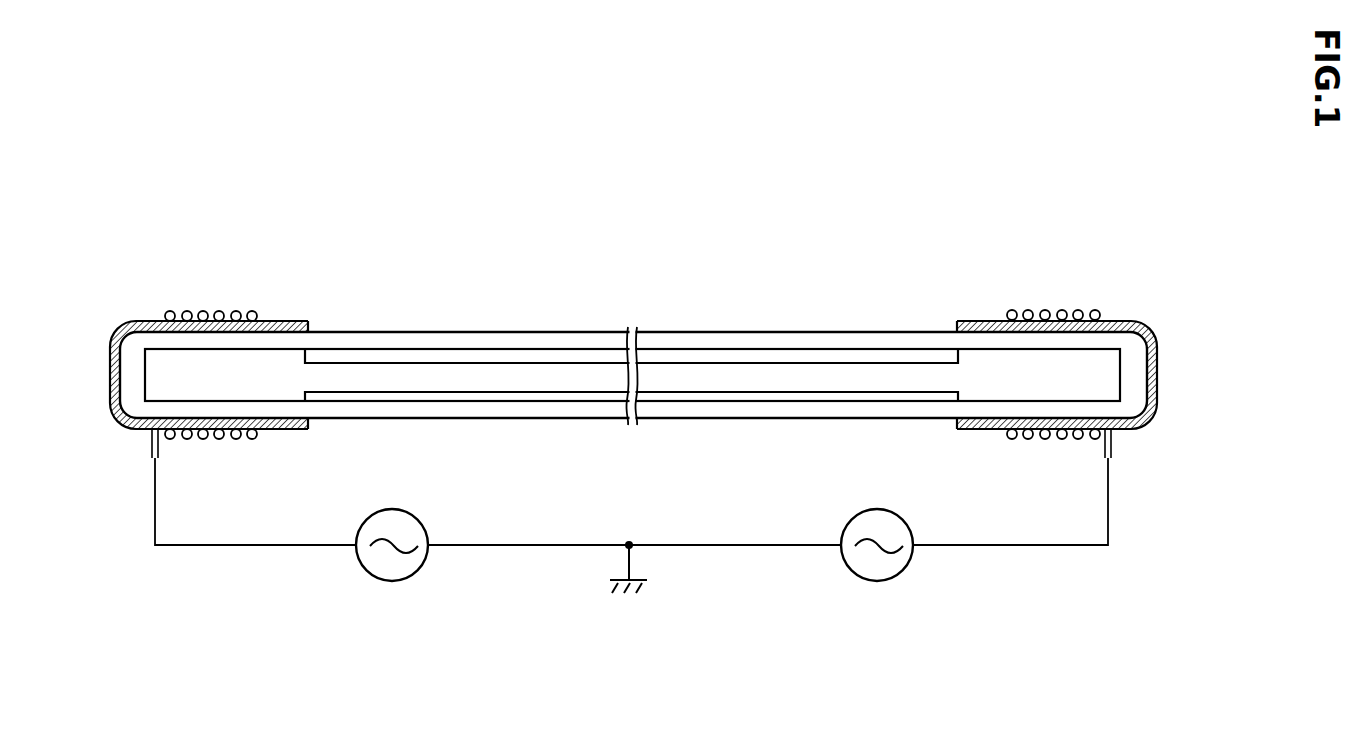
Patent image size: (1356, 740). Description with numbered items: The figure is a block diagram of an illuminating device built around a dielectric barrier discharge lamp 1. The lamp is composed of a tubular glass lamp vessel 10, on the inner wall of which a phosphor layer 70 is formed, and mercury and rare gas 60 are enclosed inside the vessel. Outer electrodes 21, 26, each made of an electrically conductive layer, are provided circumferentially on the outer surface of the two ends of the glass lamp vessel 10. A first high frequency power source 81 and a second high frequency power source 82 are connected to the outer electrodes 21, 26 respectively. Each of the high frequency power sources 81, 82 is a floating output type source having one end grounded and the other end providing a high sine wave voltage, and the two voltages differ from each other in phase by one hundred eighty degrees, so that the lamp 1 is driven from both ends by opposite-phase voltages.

The dielectric barrier discharge lamp 1 is at (432, 326).
The tubular glass lamp vessel 10 is at (700, 331).
The outer electrode 21 is at (145, 322).
The outer electrode 26 is at (982, 319).
The mercury and rare gas 60 is at (267, 383).
The phosphor layer 70 is at (733, 353).
The first high frequency power source 81 is at (385, 572).
The second high frequency power source 82 is at (872, 570).